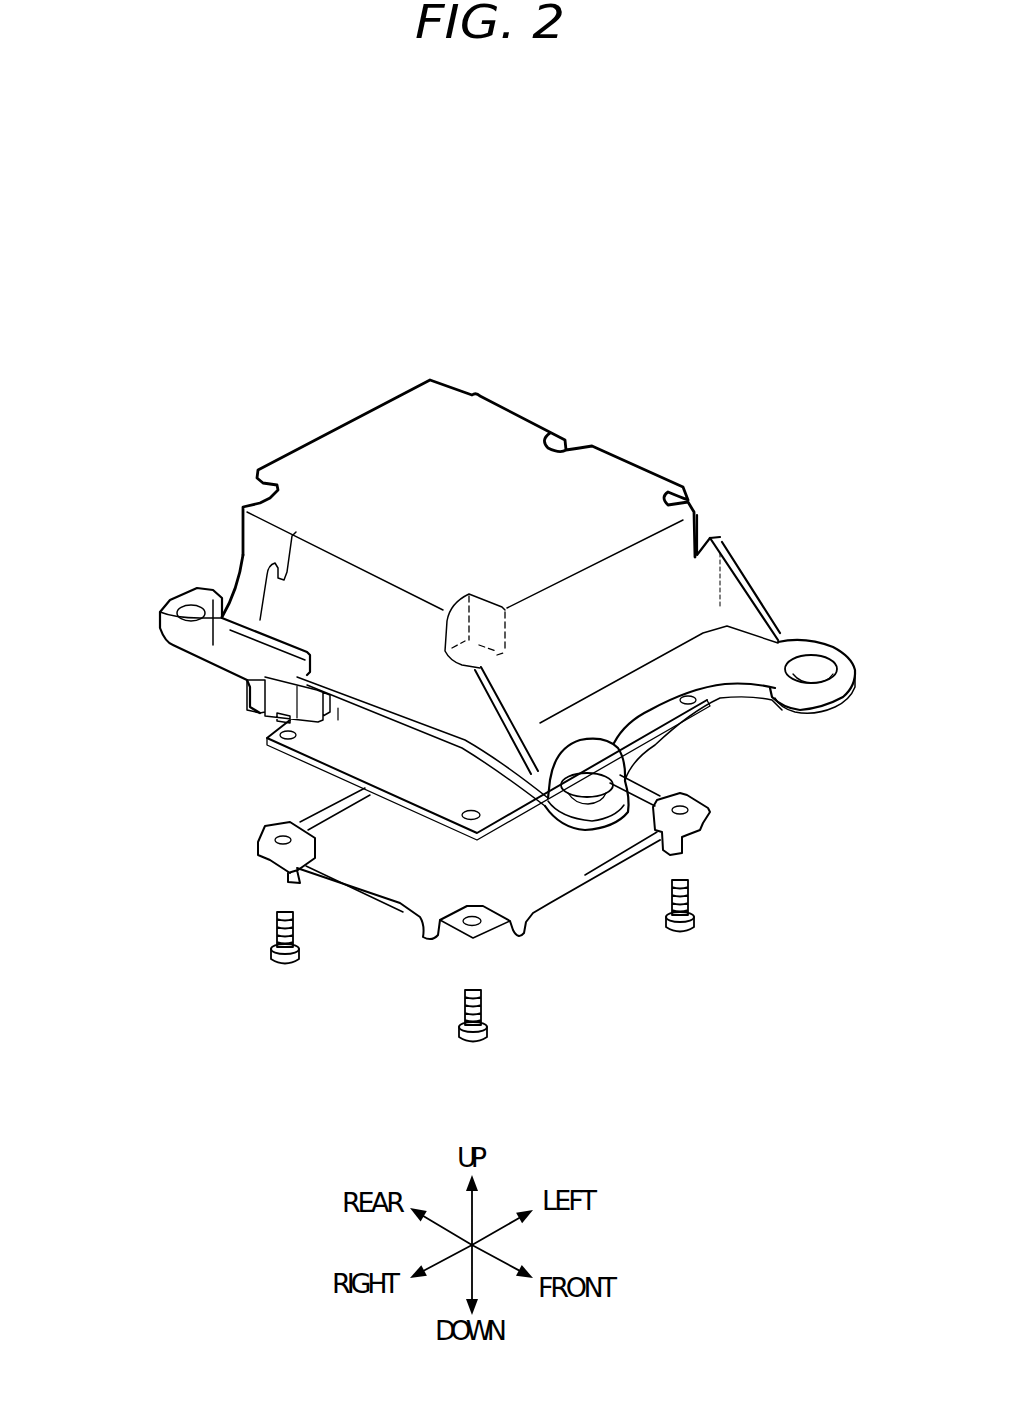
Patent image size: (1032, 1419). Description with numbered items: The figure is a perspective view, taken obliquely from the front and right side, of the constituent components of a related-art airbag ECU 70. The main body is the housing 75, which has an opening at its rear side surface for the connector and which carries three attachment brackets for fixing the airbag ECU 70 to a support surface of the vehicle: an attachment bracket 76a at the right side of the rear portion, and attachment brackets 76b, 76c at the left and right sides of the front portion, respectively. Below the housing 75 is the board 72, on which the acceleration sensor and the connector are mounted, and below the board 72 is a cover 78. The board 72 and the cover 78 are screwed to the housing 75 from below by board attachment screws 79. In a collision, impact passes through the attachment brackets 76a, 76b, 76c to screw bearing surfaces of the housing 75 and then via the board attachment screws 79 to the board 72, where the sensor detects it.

The airbag ECU 70 is at (652, 437).
The board 72 is at (332, 753).
The housing 75 is at (507, 427).
The attachment bracket 76a is at (175, 620).
The attachment bracket 76b is at (612, 740).
The attachment bracket 76c is at (790, 643).
The cover 78 is at (528, 870).
The board attachment screws 79 is at (272, 937).